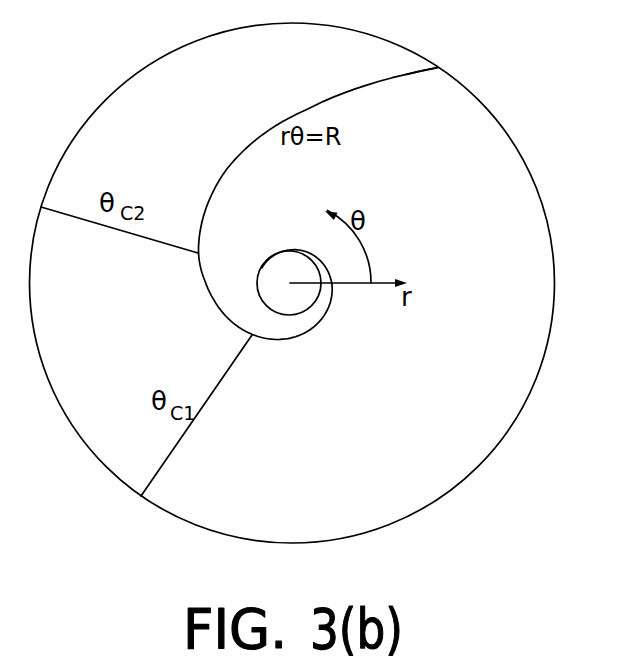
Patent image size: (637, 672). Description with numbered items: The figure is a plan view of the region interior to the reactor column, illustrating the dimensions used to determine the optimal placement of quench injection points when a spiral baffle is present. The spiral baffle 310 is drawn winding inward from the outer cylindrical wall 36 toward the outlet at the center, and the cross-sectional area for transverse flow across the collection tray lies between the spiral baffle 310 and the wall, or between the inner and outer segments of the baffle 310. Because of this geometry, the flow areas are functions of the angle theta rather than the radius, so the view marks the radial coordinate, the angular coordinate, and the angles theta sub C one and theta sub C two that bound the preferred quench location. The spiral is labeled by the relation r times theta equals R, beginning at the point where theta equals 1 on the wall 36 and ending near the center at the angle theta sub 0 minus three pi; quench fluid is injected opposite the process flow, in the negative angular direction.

The spiral baffle 310 is at (266, 131).
The cylindrical wall 36 is at (553, 322).
The spiral start point at θ=1 on outer circle 1 is at (452, 65).
The spiral end point θ0 at inner circle 0 is at (256, 260).